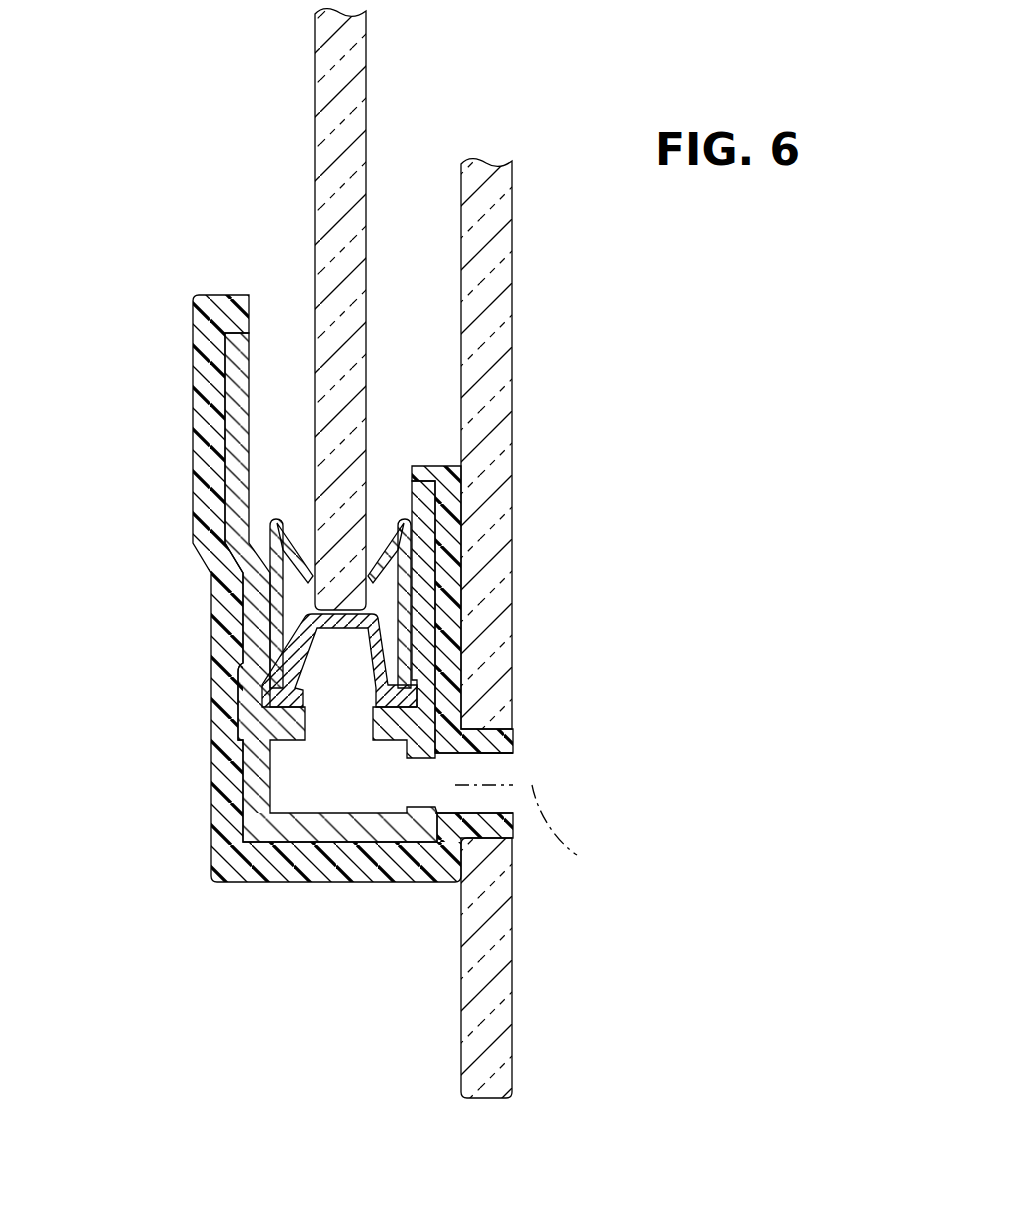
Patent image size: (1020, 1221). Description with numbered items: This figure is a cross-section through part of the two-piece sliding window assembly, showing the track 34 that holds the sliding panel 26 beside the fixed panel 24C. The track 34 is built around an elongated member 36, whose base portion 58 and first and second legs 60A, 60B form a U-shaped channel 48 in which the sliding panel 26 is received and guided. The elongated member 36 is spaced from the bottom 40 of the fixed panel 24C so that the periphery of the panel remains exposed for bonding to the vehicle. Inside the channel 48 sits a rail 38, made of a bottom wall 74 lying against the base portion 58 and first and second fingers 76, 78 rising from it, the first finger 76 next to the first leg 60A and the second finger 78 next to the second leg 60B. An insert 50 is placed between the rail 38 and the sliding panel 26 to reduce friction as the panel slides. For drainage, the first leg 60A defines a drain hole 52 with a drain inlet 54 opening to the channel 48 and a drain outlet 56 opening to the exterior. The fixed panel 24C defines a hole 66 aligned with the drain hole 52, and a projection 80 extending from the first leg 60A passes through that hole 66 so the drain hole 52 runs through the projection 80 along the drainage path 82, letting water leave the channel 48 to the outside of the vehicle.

The sliding panel 26 is at (357, 115).
The fixed panel 24C is at (498, 260).
The rail 38 is at (240, 433).
The channel 48 is at (391, 478).
The track 34 is at (180, 420).
The first leg 60A is at (455, 518).
The first finger 76 is at (425, 587).
The second leg 60B is at (227, 623).
The insert 50 is at (307, 682).
The second finger 78 is at (257, 650).
The hole 66 is at (493, 732).
The drain hole 52 is at (477, 760).
The elongated member 36 is at (223, 737).
The drain inlet 54 is at (431, 783).
The drain outlet 56 is at (527, 777).
The drainage path 82 is at (530, 829).
The base portion 58 is at (320, 877).
The projection 80 is at (490, 828).
The bottom wall 74 is at (358, 830).
The bottom 40 is at (516, 1102).